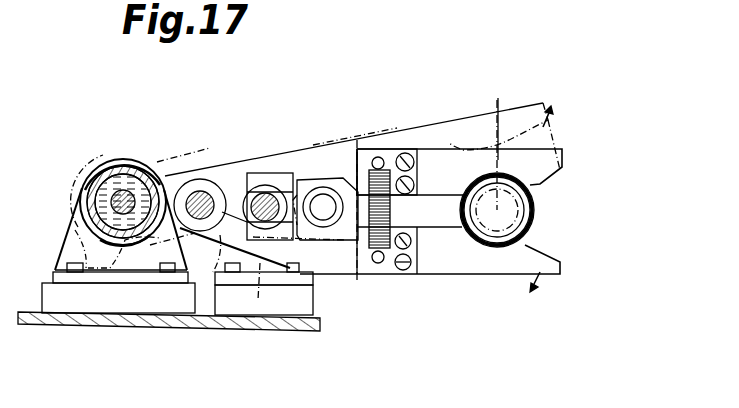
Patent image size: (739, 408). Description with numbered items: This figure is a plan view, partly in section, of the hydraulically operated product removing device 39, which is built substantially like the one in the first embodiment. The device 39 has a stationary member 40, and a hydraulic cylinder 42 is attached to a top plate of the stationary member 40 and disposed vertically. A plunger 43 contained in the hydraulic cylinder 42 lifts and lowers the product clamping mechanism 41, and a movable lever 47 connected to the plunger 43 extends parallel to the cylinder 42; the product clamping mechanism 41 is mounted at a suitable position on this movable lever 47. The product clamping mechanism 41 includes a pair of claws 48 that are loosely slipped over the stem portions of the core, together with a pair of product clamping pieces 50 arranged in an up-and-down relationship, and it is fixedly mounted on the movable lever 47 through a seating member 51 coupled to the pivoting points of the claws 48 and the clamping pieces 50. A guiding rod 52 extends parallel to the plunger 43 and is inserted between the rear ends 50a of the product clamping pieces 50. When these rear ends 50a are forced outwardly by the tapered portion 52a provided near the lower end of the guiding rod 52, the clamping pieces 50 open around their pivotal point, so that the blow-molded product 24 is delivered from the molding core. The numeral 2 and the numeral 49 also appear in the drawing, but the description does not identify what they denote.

The axis of rotation 2 is at (522, 181).
The product 24 is at (497, 248).
The product removing device 39 is at (145, 153).
The stationary member 40 is at (146, 325).
The product clamping mechanism 41 is at (402, 144).
The hydraulic cylinder 42 is at (95, 177).
The plunger 43 is at (111, 199).
The movable lever 47 is at (200, 200).
The claws 48 is at (538, 205).
The tension spring 49 is at (384, 265).
The product clamping pieces 50 is at (487, 150).
The rear ends 50a is at (258, 174).
The seating member 51 is at (207, 240).
The guiding rod 52 is at (266, 200).
The tapered portion 52a is at (260, 192).